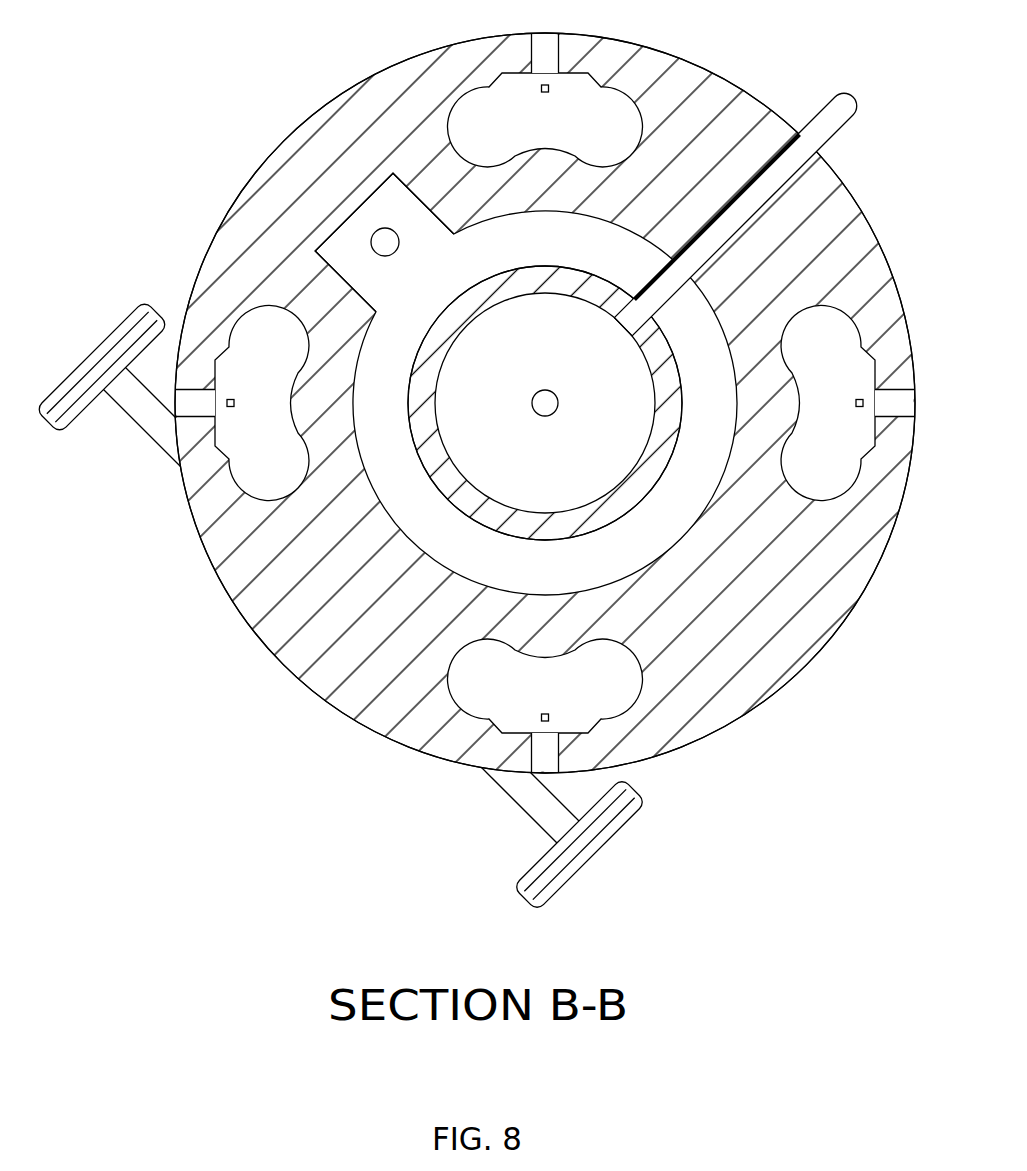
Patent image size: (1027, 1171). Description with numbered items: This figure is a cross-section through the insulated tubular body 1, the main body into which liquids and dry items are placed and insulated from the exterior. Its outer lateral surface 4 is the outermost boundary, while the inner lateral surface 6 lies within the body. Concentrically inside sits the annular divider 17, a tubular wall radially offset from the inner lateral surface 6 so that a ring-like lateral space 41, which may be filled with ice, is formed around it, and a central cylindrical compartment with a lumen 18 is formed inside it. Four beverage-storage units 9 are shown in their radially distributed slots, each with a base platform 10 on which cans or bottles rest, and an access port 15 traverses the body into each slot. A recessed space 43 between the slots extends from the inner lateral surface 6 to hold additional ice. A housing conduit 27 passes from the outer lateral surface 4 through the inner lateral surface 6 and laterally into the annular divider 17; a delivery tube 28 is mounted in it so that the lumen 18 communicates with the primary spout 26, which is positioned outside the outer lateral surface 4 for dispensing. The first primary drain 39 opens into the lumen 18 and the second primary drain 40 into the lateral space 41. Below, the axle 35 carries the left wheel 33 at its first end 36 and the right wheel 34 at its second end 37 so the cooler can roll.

The insulated tubular body 1 is at (712, 58).
The outer lateral surface 4 is at (263, 162).
The inner lateral surface 6 is at (598, 578).
The beverage-storage units 9 is at (322, 348).
The base platform 10 is at (296, 408).
The access port 15 is at (548, 40).
The annular divider 17 is at (436, 330).
The lumen 18 is at (642, 365).
The primary spout 26 is at (846, 102).
The housing conduit 27 is at (628, 322).
The delivery tube 28 is at (646, 286).
The left wheel 33 is at (140, 320).
The right wheel 34 is at (520, 883).
The axle 35 is at (495, 780).
The first end 36 is at (122, 392).
The second end 37 is at (552, 820).
The first primary drain 39 is at (543, 395).
The second primary drain 40 is at (388, 245).
The lateral space 41 is at (410, 502).
The recessed space 43 is at (388, 212).